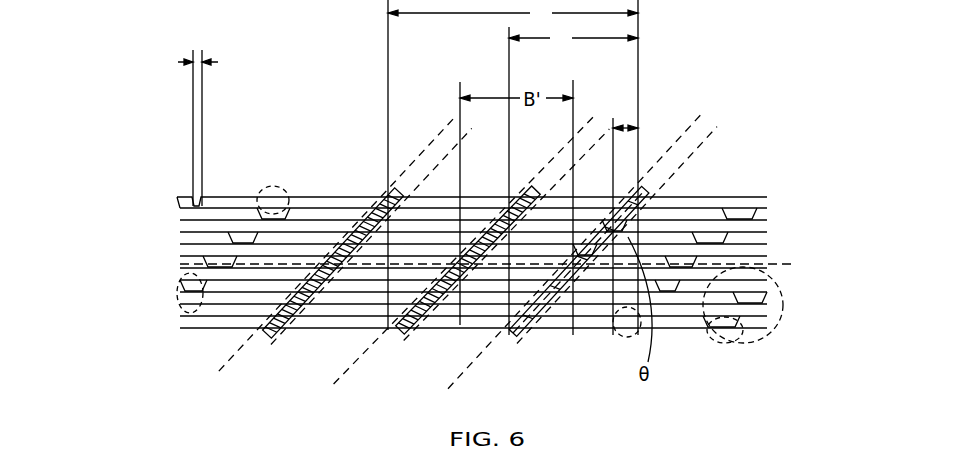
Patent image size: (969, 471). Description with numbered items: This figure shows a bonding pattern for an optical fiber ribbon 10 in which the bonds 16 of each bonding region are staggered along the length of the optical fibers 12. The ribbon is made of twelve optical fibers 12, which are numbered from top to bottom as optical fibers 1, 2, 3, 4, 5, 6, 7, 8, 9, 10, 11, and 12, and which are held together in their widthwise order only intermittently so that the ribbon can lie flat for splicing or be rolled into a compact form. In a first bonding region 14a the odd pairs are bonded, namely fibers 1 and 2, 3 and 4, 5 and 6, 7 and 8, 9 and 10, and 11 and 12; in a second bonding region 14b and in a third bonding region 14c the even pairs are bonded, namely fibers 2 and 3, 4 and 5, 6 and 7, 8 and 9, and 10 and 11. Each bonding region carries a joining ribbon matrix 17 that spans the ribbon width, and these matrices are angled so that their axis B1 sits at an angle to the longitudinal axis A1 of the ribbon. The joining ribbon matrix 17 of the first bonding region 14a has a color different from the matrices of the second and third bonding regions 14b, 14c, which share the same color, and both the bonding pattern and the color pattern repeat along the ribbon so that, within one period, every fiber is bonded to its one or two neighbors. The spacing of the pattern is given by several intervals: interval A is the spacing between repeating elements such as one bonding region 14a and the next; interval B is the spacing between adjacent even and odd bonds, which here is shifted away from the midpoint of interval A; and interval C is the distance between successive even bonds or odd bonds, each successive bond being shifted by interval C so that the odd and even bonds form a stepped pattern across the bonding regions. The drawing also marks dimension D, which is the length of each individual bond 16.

The optical fiber 1 is at (177, 197).
The optical fiber 2 is at (180, 208).
The optical fiber 3 is at (180, 220).
The optical fiber 4 is at (180, 232).
The optical fiber 5 is at (180, 244).
The optical fiber 6 is at (180, 256).
The optical fiber 7 is at (180, 268).
The optical fiber 8 is at (180, 280).
The optical fiber 9 is at (180, 292).
The optical fiber ribbon 10 is at (180, 304).
The optical fiber 11 is at (180, 316).
The optical fibers 12 is at (180, 328).
The first bonding region 14a is at (433, 215).
The second bonding region 14b is at (696, 227).
The third bonding region 14c is at (600, 230).
The bonds 16 is at (234, 260).
The joining ribbon matrix 17 is at (265, 340).
The longitudinal axis A1 is at (464, 259).
The axis B1 is at (321, 371).
The interval A is at (513, 167).
The interval B is at (573, 181).
The interval C is at (625, 218).
The dimension D is at (189, 128).